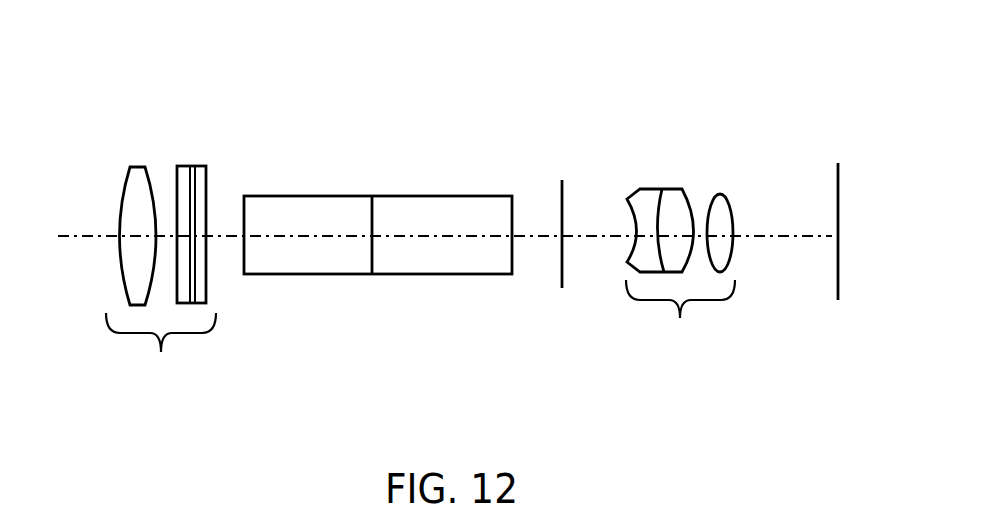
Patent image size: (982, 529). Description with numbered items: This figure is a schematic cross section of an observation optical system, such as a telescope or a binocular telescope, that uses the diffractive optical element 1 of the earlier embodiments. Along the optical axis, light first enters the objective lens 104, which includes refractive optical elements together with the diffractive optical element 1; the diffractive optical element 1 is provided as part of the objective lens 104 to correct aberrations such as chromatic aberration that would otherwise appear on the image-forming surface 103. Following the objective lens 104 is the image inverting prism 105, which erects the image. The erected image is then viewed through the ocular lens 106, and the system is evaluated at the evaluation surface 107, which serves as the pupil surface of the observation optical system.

The diffractive optical element 1 is at (197, 166).
The image-forming surface 103 is at (562, 180).
The objective lens 104 is at (163, 235).
The image inverting prism 105 is at (345, 218).
The ocular lens 106 is at (680, 275).
The evaluation surface 107 is at (838, 185).